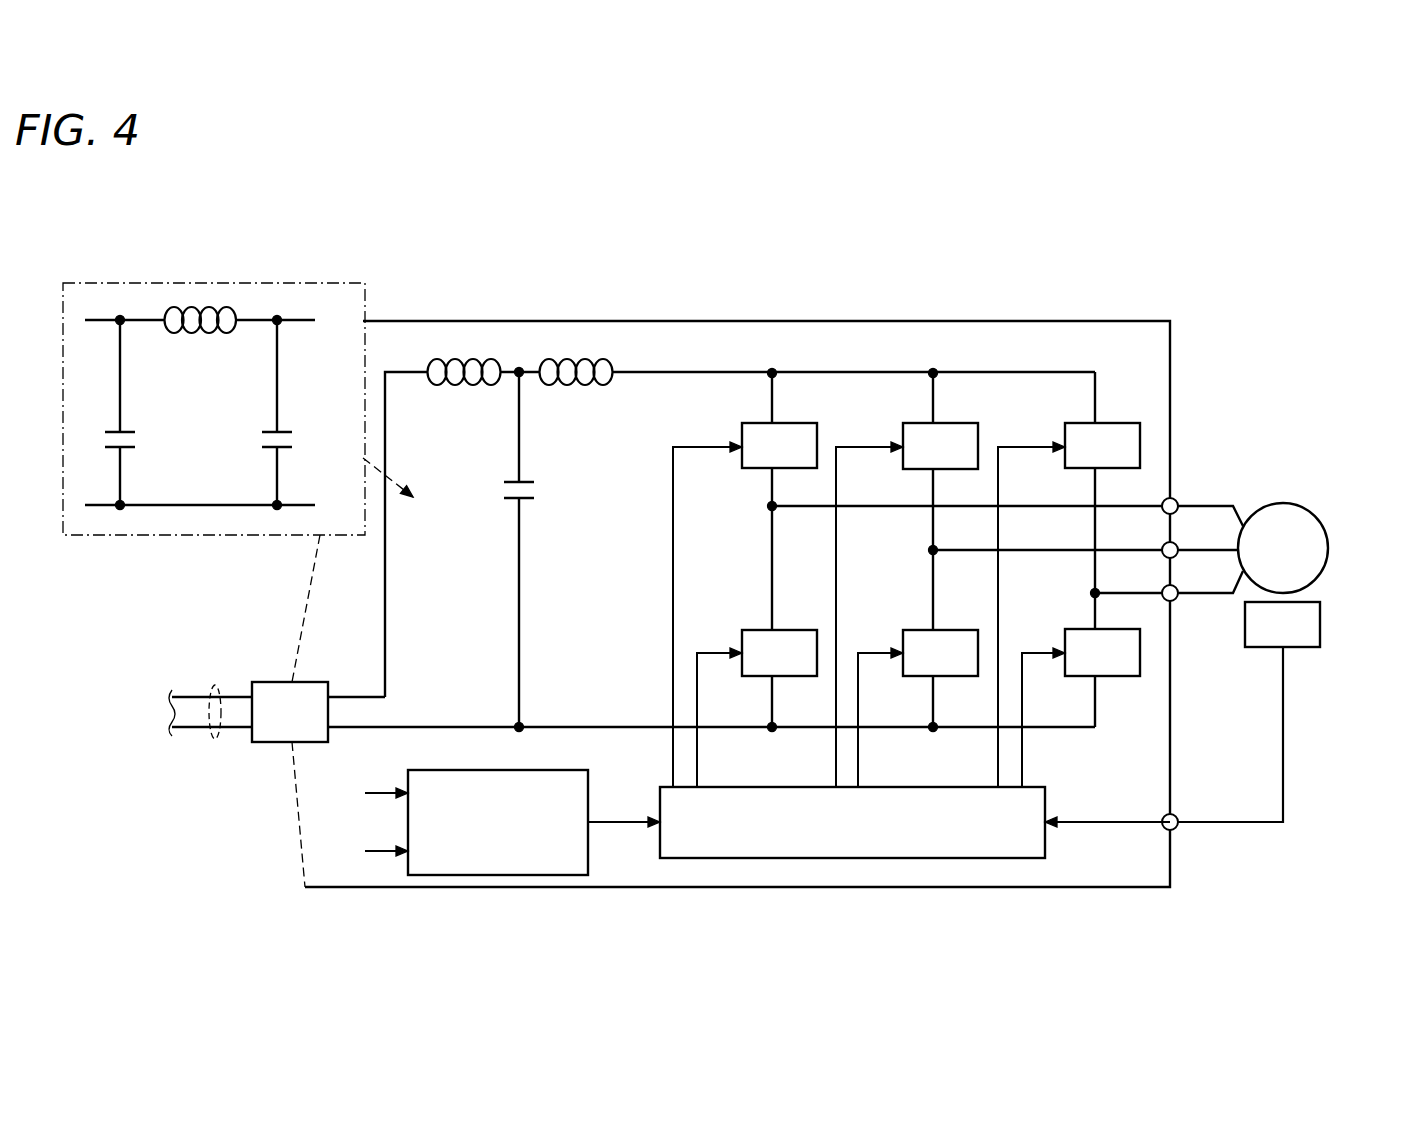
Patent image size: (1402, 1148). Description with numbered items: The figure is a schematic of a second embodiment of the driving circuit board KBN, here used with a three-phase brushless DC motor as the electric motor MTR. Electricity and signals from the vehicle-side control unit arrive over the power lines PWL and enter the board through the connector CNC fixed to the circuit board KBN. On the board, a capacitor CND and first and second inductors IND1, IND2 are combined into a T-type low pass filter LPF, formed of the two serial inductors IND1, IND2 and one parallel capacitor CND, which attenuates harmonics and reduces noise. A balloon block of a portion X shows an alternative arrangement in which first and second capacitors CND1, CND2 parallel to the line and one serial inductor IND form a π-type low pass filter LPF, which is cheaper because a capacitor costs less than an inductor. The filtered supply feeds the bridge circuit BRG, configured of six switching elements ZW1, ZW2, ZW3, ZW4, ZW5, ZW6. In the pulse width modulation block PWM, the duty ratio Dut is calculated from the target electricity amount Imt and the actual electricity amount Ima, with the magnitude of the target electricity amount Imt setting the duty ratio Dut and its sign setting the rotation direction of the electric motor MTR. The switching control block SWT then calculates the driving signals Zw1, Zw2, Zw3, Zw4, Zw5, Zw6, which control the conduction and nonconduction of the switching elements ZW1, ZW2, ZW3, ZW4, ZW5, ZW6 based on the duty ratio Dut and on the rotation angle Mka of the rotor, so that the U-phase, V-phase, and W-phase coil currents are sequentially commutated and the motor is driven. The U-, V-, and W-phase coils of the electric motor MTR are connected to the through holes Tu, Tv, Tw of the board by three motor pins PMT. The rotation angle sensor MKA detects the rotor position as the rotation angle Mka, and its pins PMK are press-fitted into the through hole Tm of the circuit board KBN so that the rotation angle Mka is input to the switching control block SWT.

The driving circuit board KBN is at (655, 322).
The portion X is at (97, 283).
The inductor IND is at (201, 340).
The first capacitor CND1 is at (150, 412).
The second capacitor CND2 is at (244, 412).
The low pass filter LPF is at (222, 417).
The first inductor IND1 is at (464, 396).
The second inductor IND2 is at (576, 396).
The capacitor CND is at (549, 549).
The bridge circuit BRG is at (725, 605).
The switching element ZW1 is at (779, 445).
The switching element ZW2 is at (940, 446).
The switching element ZW3 is at (1102, 445).
The switching element ZW4 is at (779, 653).
The switching element ZW5 is at (940, 653).
The switching element ZW6 is at (1102, 652).
The driving signal Zw1 is at (707, 598).
The driving signal Zw2 is at (869, 598).
The driving signal Zw3 is at (1031, 598).
The driving signal Zw4 is at (727, 717).
The driving signal Zw5 is at (888, 717).
The driving signal Zw6 is at (1051, 717).
The through hole Tu is at (1006, 499).
The through hole Tv is at (1084, 537).
The through hole Tw is at (1167, 581).
The motor pin PMT is at (1283, 508).
The electric motor MTR is at (1283, 548).
The rotation angle sensor MKA is at (1282, 624).
The pin PMK is at (1285, 722).
The through hole Tm is at (1191, 808).
The rotation angle Mka is at (1107, 806).
The switching control block SWT is at (852, 822).
The pulse width modulation block PWM is at (498, 822).
The target electricity amount Imt is at (362, 793).
The actual electricity amount Ima is at (360, 848).
The duty ratio Dut is at (624, 806).
The connector CNC is at (318, 712).
The power line PWL is at (210, 695).